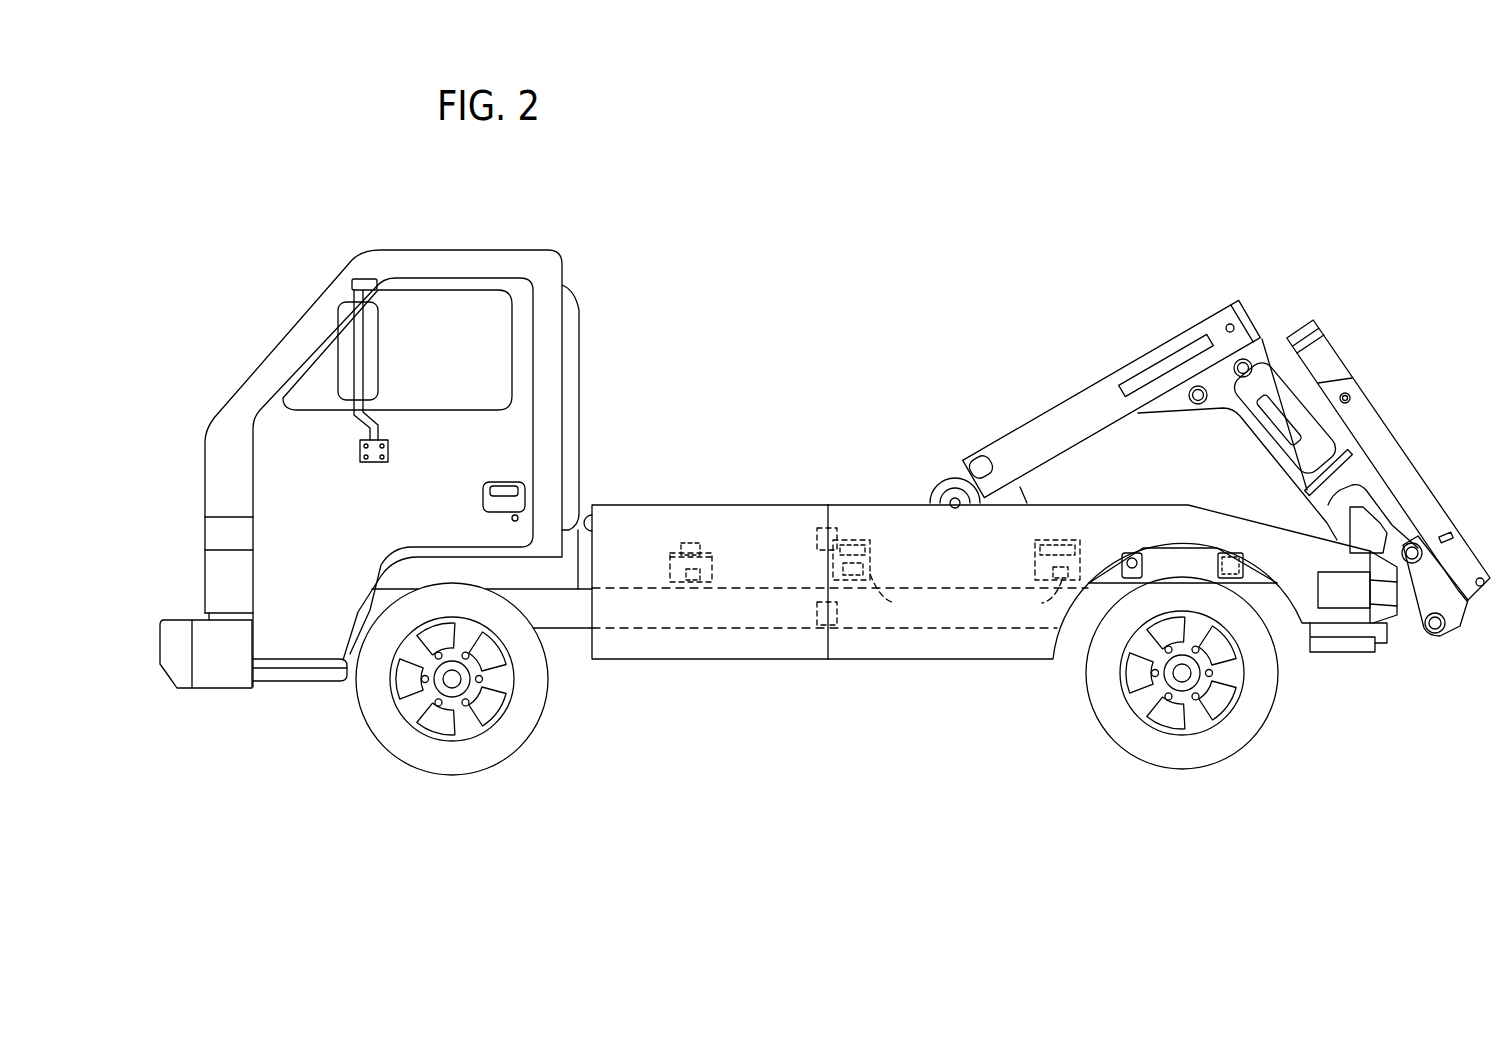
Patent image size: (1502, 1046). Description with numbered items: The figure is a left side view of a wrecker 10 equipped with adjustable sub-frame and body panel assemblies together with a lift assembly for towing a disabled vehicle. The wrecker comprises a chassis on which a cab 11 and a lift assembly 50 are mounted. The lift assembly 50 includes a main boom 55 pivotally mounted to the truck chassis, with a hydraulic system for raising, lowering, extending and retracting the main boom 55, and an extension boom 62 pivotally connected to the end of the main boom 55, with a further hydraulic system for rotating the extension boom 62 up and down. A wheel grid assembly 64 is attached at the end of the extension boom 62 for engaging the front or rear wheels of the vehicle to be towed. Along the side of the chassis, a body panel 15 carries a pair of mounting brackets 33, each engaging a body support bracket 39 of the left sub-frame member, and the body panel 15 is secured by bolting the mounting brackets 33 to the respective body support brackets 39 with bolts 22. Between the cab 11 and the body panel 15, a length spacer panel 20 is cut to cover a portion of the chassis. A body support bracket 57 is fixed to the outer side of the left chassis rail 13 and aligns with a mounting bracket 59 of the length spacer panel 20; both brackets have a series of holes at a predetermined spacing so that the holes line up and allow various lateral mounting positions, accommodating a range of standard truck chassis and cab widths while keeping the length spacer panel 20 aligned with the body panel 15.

The wrecker 10 is at (914, 298).
The cab 11 is at (508, 265).
The left chassis rail 13 is at (565, 625).
The body panel 15 is at (990, 650).
The length spacer panel 20 is at (638, 530).
The bolts 22 is at (853, 540).
The mounting brackets 33 is at (875, 552).
The body support bracket 39 is at (895, 603).
The lift assembly 50 is at (1305, 285).
The main boom 55 is at (1053, 417).
The body support bracket 57 is at (676, 583).
The mounting bracket 59 is at (712, 566).
The extension boom 62 is at (1398, 462).
The wheel grid assembly 64 is at (1322, 356).